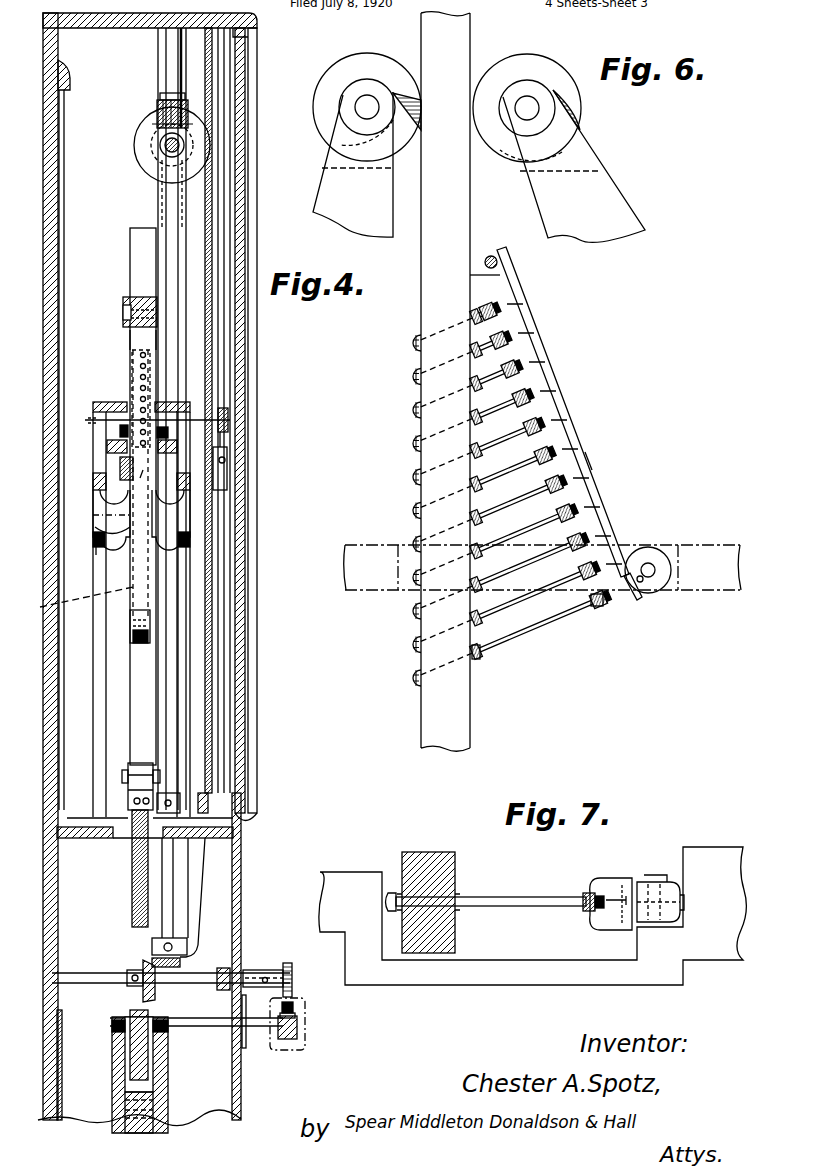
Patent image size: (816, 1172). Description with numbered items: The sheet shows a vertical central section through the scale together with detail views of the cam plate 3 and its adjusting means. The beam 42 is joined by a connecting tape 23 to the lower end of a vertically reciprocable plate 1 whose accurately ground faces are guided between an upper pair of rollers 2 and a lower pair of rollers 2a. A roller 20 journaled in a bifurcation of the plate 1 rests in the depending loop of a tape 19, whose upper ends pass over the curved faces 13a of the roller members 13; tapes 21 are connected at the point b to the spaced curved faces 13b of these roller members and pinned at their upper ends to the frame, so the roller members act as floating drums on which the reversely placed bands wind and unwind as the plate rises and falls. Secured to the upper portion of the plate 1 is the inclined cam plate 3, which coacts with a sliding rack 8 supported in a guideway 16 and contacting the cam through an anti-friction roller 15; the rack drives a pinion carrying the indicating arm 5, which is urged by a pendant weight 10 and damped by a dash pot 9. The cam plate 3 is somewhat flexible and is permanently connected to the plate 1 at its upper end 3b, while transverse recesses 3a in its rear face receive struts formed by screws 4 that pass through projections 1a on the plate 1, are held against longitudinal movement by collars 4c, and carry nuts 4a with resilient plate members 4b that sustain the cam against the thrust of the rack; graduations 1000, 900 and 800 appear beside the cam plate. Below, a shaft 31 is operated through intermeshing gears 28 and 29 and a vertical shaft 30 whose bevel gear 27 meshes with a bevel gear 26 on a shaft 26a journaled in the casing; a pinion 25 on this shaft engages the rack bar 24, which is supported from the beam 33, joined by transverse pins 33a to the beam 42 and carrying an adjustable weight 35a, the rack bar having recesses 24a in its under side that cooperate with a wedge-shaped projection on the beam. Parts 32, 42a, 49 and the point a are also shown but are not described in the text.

In FIG. 4, the plate 1 is at (135, 247).
In FIG. 6, the plate 1 is at (430, 30).
In FIG. 7, the plate 1 is at (427, 858).
In FIG. 6, the projections 1a is at (410, 664).
In FIG. 4, the rollers 2 is at (138, 300).
In FIG. 6, the rollers 2 is at (352, 68).
In FIG. 4, the rollers 2a is at (128, 773).
In FIG. 4, the cam plate 3 is at (130, 370).
In FIG. 6, the cam plate 3 is at (568, 415).
In FIG. 7, the cam plate 3 is at (622, 890).
In FIG. 6, the transverse recesses 3a is at (595, 470).
In FIG. 6, the upper end connection 3b is at (500, 262).
In FIG. 4, the screws 4 is at (143, 368).
In FIG. 6, the screws 4 is at (550, 618).
In FIG. 7, the screws 4 is at (535, 898).
In FIG. 6, the nuts 4a is at (601, 610).
In FIG. 7, the nuts 4a is at (590, 912).
In FIG. 6, the plate members 4b is at (630, 598).
In FIG. 7, the plate members 4b is at (612, 918).
In FIG. 6, the collars 4c is at (476, 662).
In FIG. 4, the indicating arm 5 is at (222, 352).
In FIG. 4, the sliding rack 8 is at (170, 432).
In FIG. 6, the sliding rack 8 is at (712, 585).
In FIG. 7, the sliding rack 8 is at (710, 855).
In FIG. 4, the dash pot 9 is at (127, 453).
In FIG. 4, the pendant weight 10 is at (122, 472).
In FIG. 4, the roller members 13 is at (100, 505).
In FIG. 4, the curved faces 13a is at (90, 515).
In FIG. 4, the spaced curved faces 13b is at (97, 527).
In FIG. 6, the roller 15 is at (655, 553).
In FIG. 7, the roller 15 is at (655, 880).
In FIG. 4, the guideway 16 is at (170, 406).
In FIG. 4, the tape 19 is at (40, 607).
In FIG. 4, the roller 20 is at (142, 645).
In FIG. 4, the tapes 21 is at (97, 483).
In FIG. 4, the connecting tape 23 is at (135, 890).
In FIG. 4, the rack bar 24 is at (297, 1009).
In FIG. 4, the recesses 24a is at (302, 1022).
In FIG. 4, the pinion 25 is at (285, 965).
In FIG. 4, the bevel gear 26 is at (158, 996).
In FIG. 4, the shaft 26a is at (107, 980).
In FIG. 4, the bevel gear 27 is at (190, 960).
In FIG. 4, the gear 28 is at (157, 118).
In FIG. 4, the gear 29 is at (160, 162).
In FIG. 4, the vertical shaft 30 is at (172, 213).
In FIG. 4, the shaft 31 is at (165, 148).
In FIG. 4, the pulley 32 is at (136, 137).
In FIG. 4, the beam 33 is at (297, 1040).
In FIG. 4, the transverse pins 33a is at (207, 1027).
In FIG. 4, the adjustable weight 35a is at (285, 1062).
In FIG. 4, the beam 42 is at (133, 1072).
In FIG. 4, the plunger shoulders 42a is at (124, 1022).
In FIG. 4, the cylinder 49 is at (165, 1068).
In FIG. 4, the point a is at (146, 464).
In FIG. 4, the connection point b is at (97, 547).
In FIG. 6, the scale mark 1000 is at (524, 295).
In FIG. 6, the scale mark 900 is at (530, 322).
In FIG. 6, the scale mark 800 is at (538, 350).